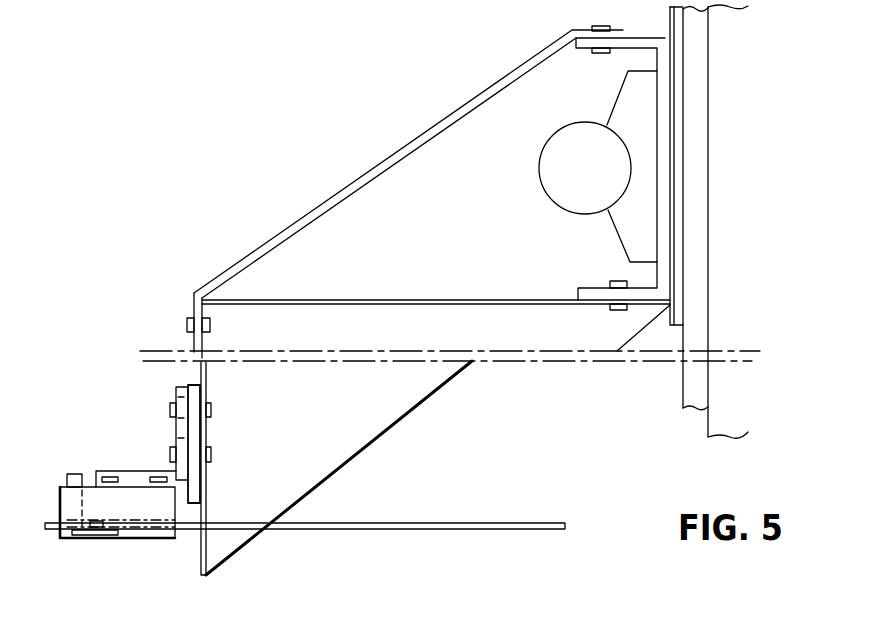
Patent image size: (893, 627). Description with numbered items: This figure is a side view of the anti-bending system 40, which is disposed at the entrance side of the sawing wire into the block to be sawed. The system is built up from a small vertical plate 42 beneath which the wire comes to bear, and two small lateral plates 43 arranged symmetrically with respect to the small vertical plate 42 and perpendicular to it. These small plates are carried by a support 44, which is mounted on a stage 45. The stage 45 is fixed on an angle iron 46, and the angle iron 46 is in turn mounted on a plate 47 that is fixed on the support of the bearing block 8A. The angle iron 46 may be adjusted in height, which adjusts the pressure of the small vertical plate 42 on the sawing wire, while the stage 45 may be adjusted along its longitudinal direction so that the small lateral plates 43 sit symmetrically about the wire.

The bearing block 8A is at (632, 105).
The anti-bending system 40 is at (95, 496).
The small vertical plate 42 is at (68, 482).
The small lateral plates 43 is at (97, 527).
The support 44 is at (150, 510).
The stage 45 is at (135, 487).
The angle iron 46 is at (172, 403).
The plate 47 is at (420, 377).